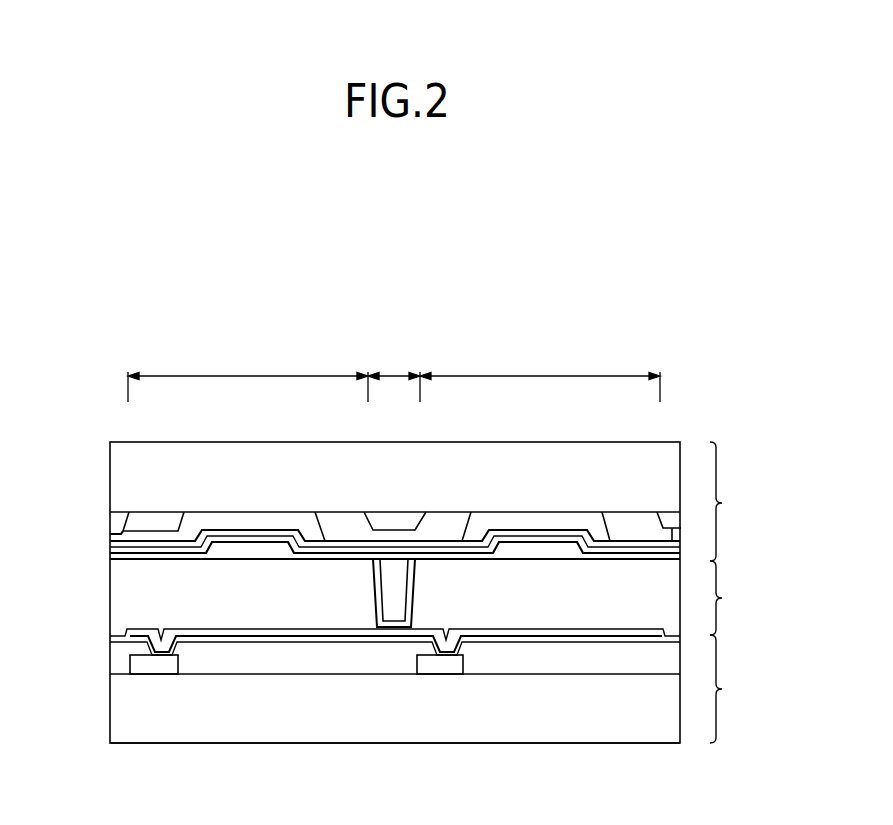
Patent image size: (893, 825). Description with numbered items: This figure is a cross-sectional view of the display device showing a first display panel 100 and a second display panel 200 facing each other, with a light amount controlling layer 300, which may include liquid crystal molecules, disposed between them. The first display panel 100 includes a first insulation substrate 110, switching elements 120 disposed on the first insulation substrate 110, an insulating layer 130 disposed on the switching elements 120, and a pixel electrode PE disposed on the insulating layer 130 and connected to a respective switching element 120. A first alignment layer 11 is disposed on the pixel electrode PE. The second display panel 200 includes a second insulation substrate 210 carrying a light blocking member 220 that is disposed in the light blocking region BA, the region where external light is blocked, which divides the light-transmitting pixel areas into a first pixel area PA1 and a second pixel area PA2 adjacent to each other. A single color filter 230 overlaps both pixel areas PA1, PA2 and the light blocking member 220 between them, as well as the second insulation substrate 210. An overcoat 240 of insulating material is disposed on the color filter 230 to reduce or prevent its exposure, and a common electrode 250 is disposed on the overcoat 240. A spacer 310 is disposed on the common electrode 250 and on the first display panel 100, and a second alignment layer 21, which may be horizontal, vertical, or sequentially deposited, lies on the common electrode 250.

The first display panel 100 is at (732, 689).
The first insulation substrate 110 is at (206, 720).
The switching element 120 is at (155, 665).
The insulating layer 130 is at (263, 660).
The pixel electrode PE is at (325, 640).
The first alignment layer 11 is at (556, 630).
The second display panel 200 is at (732, 501).
The second insulation substrate 210 is at (123, 471).
The light blocking member 220 is at (118, 520).
The color filter 230 is at (110, 534).
The overcoat 240 is at (108, 546).
The common electrode 250 is at (108, 555).
The second alignment layer 21 is at (133, 563).
The light amount controlling layer 300 is at (732, 598).
The spacer 310 is at (393, 608).
The first pixel area PA1 is at (540, 373).
The second pixel area PA2 is at (248, 373).
The light blocking region BA is at (394, 373).